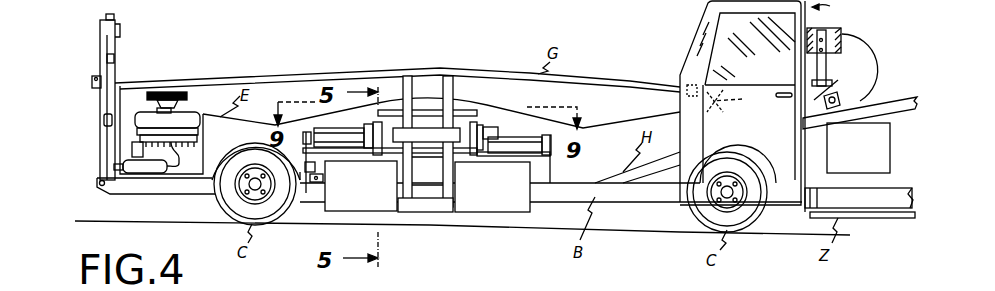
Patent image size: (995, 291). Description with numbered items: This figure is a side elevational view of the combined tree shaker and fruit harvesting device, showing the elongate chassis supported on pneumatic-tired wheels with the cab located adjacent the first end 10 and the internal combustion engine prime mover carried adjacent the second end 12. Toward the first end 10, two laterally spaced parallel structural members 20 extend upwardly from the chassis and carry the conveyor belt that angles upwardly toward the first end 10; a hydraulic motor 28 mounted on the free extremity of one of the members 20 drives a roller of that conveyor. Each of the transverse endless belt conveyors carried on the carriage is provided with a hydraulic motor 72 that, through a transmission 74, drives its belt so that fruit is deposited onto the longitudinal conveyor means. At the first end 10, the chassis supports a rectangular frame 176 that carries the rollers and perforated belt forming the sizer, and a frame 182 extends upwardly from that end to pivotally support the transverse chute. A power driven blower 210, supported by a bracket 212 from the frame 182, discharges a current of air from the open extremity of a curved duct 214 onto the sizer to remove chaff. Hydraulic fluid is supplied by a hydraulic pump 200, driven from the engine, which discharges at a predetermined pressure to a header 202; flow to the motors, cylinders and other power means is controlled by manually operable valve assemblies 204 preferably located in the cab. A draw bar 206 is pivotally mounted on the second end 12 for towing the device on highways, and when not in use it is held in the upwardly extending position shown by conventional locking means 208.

The first end 10 is at (767, 133).
The second end 12 is at (110, 186).
The structural members 20 is at (653, 170).
The hydraulic motor 28 is at (855, 108).
The hydraulic motor 72 is at (364, 136).
The transmission 74 is at (374, 156).
The rectangular frame 176 is at (867, 113).
The frame 182 is at (798, 153).
The hydraulic pump 200 is at (308, 192).
The header 202 is at (310, 157).
The valve assemblies 204 is at (685, 93).
The draw bar 206 is at (100, 144).
The locking means 208 is at (92, 80).
The power driven blower 210 is at (833, 30).
The bracket 212 is at (810, 98).
The curved duct 214 is at (862, 56).